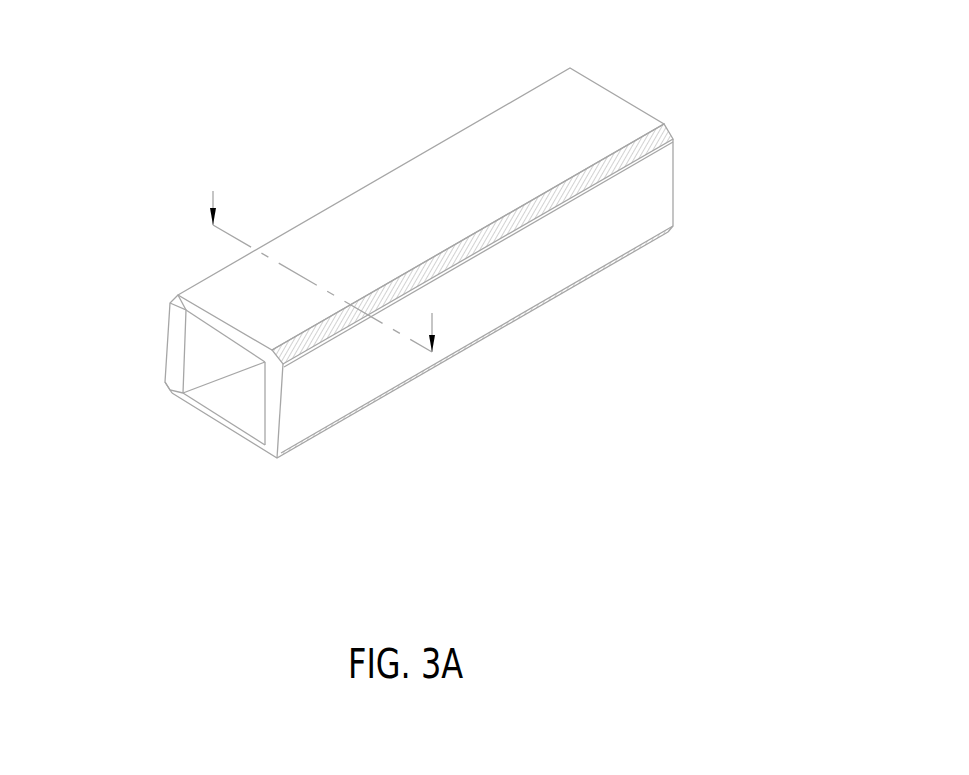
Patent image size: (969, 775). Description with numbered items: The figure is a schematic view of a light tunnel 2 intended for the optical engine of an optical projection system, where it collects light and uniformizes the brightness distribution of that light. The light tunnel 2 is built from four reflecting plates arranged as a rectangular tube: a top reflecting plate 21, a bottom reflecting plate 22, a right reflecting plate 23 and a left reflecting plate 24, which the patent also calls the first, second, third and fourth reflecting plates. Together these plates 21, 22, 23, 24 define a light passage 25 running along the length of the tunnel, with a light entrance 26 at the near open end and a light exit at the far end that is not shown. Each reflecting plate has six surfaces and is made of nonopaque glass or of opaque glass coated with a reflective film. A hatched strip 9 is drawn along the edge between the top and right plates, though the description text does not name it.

The light tunnel 2 is at (213, 72).
The adhesive strip 9 is at (670, 133).
The top reflecting plate 21 is at (410, 185).
The bottom reflecting plate 22 is at (218, 427).
The right reflecting plate 23 is at (273, 412).
The left reflecting plate 24 is at (175, 347).
The light passage 25 is at (210, 398).
The light entrance 26 is at (250, 420).